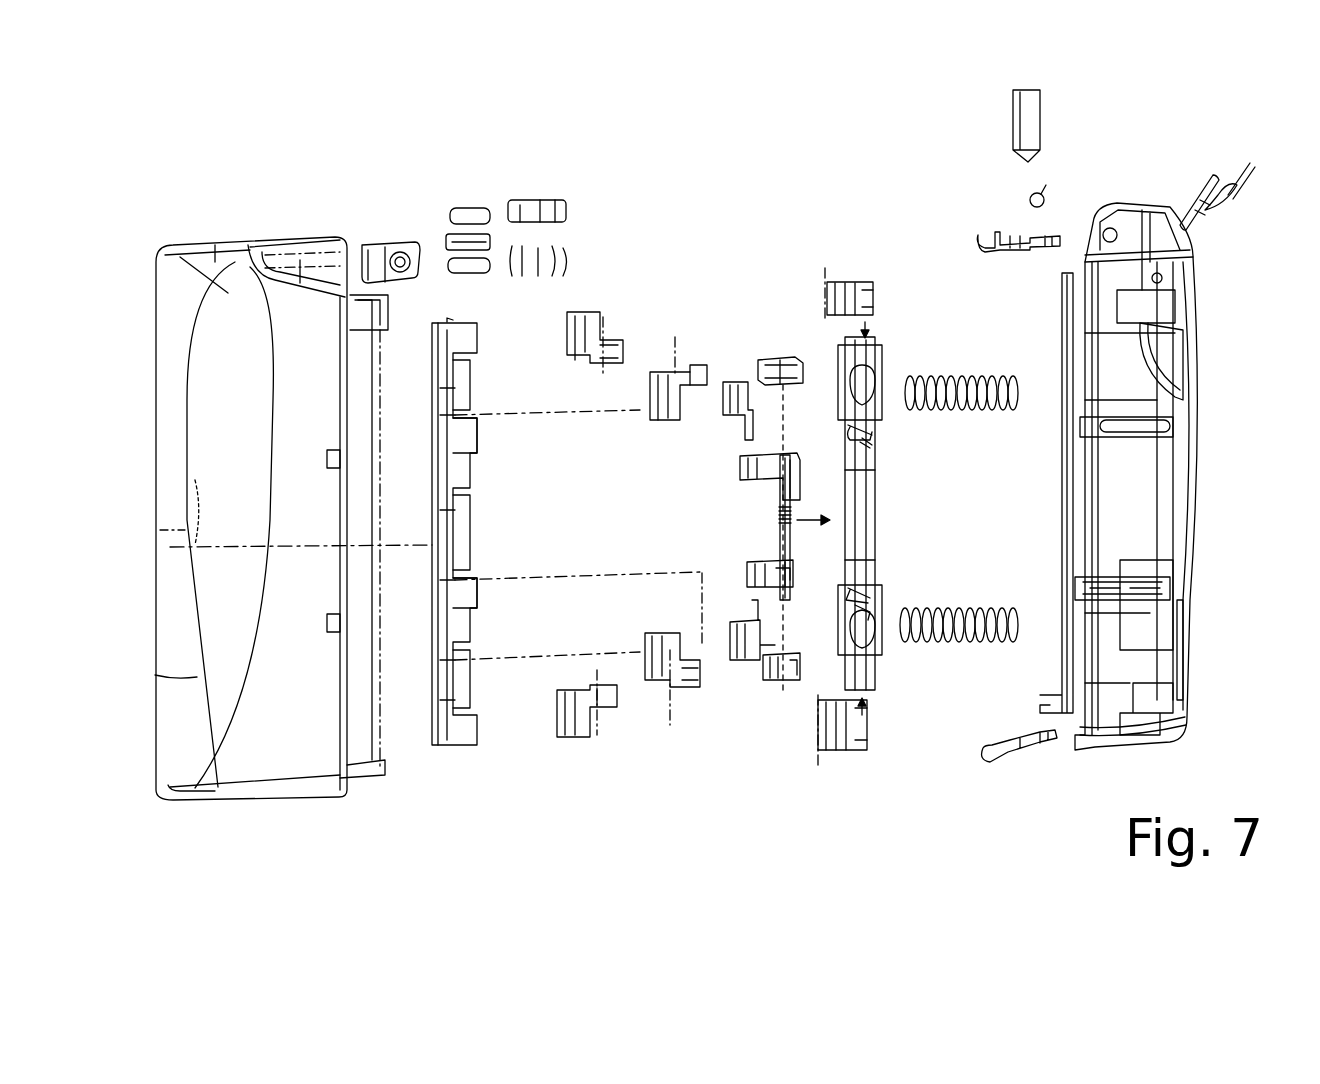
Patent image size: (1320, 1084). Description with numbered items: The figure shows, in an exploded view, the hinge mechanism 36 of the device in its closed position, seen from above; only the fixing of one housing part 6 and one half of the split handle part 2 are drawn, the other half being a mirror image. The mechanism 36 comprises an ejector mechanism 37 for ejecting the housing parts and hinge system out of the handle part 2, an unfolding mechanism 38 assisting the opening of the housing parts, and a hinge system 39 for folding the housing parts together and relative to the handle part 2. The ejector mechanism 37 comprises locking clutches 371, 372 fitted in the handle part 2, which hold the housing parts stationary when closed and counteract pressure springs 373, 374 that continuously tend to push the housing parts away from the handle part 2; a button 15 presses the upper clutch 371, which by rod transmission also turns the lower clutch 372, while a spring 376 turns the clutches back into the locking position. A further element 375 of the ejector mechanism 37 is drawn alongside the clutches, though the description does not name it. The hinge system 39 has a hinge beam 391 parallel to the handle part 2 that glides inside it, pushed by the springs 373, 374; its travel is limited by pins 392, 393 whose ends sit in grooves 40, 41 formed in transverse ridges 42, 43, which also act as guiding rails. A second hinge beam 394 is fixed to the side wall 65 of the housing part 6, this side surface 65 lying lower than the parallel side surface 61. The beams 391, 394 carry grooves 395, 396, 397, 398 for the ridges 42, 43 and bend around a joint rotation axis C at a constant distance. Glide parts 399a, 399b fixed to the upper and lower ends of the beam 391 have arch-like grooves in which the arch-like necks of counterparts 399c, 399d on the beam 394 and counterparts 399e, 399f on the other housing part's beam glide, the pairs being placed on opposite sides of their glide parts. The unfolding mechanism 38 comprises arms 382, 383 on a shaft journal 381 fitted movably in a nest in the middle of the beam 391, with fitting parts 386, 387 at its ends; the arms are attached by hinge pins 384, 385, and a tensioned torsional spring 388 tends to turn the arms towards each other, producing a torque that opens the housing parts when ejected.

The handle part 2 is at (1131, 476).
The housing part 6 is at (293, 466).
The button 15 is at (1027, 108).
The hinge mechanism 36 is at (768, 122).
The ejector mechanism 37 is at (1070, 190).
The unfolding mechanism 38 is at (684, 515).
The hinge system 39 is at (655, 278).
The groove 40 is at (1103, 397).
The groove 41 is at (1113, 590).
The transverse ridge 42 is at (1085, 427).
The transverse ridge 43 is at (1075, 592).
The side surface 61 is at (275, 310).
The side wall 65 is at (363, 367).
The locking clutch 371 is at (1030, 250).
The locking clutch 372 is at (1020, 742).
The pressure spring 373 is at (990, 405).
The pressure spring 374 is at (985, 612).
The strip 375 is at (1062, 545).
The spring 376 is at (1030, 198).
The shaft journal 381 is at (785, 510).
The arm 382 is at (763, 478).
The arm 383 is at (763, 570).
The hinge pin 384 is at (743, 405).
The hinge pin 385 is at (758, 632).
The fitting part 386 is at (775, 358).
The fitting part 387 is at (767, 680).
The torsional spring 388 is at (788, 520).
The hinge beam 391 is at (898, 503).
The pin 392 is at (870, 430).
The pin 393 is at (870, 600).
The hinge beam 394 is at (539, 531).
The groove 395 is at (445, 447).
The groove 396 is at (440, 598).
The groove 397 is at (873, 440).
The groove 398 is at (872, 612).
The glide part 399a is at (870, 298).
The glide part 399b is at (868, 730).
The counterpart 399c is at (665, 410).
The counterpart 399d is at (662, 637).
The counterpart 399e is at (583, 342).
The counterpart 399f is at (577, 707).
The rotation axis C is at (403, 378).